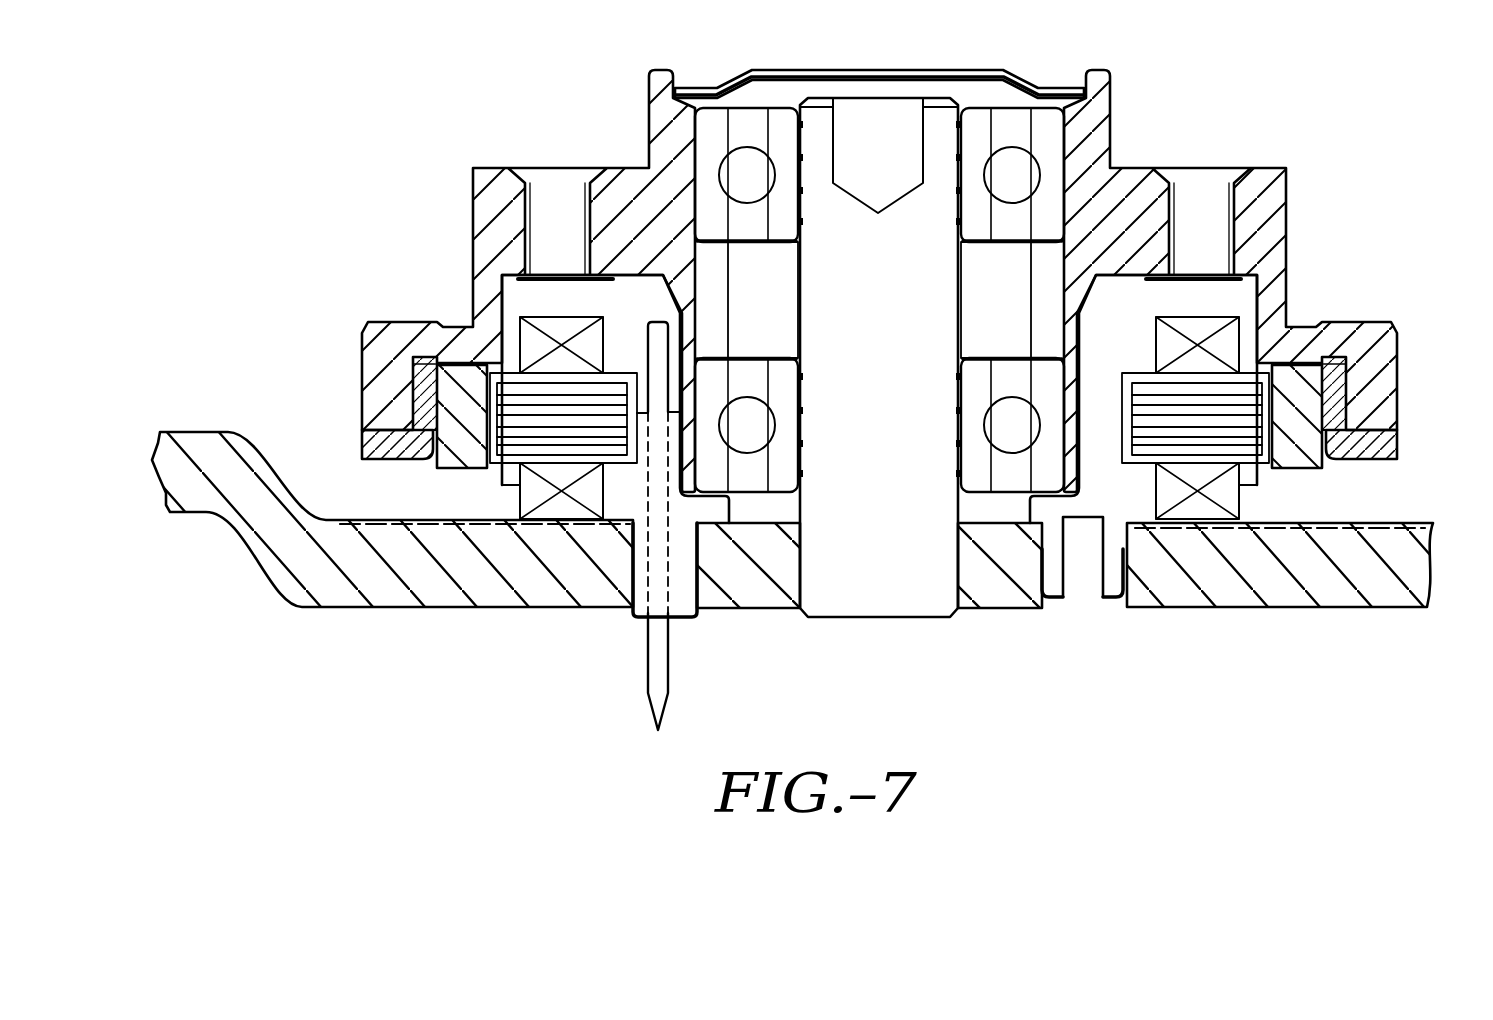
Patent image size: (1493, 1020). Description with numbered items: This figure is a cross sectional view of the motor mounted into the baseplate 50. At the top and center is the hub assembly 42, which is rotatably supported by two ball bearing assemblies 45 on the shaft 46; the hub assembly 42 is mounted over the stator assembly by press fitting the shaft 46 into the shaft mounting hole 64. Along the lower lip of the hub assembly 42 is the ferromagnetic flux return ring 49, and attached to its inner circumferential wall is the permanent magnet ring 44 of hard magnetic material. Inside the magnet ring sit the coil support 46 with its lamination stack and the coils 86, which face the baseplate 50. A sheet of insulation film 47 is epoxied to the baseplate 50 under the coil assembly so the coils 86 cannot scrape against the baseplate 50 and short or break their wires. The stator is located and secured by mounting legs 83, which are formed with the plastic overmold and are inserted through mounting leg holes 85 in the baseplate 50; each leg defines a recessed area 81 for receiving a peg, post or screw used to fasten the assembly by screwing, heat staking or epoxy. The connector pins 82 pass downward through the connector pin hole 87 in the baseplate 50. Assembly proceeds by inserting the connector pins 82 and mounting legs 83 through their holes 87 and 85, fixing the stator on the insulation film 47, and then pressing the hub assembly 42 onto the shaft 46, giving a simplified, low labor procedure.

The hub assembly 42 is at (1288, 235).
The permanent magnet ring 44 is at (447, 402).
The ball bearing assemblies 45 is at (1013, 185).
The shaft 46 is at (1148, 402).
The insulation film 47 is at (396, 520).
The flux return ring 49 is at (1399, 455).
The baseplate 50 is at (1362, 610).
The shaft mounting hole 64 is at (795, 612).
The recessed area 81 is at (1087, 552).
The connector pins 82 is at (668, 676).
The mounting legs 83 is at (1050, 603).
The mounting leg holes 85 is at (1118, 603).
The coils 86 is at (1240, 505).
The connector pin hole 87 is at (632, 620).